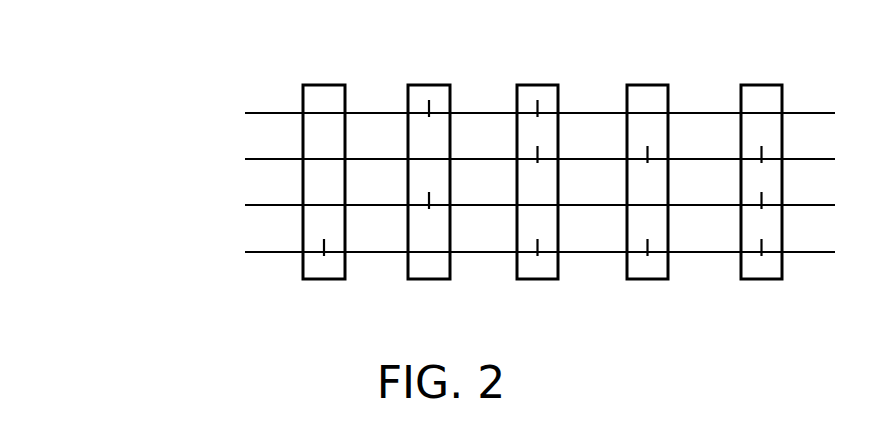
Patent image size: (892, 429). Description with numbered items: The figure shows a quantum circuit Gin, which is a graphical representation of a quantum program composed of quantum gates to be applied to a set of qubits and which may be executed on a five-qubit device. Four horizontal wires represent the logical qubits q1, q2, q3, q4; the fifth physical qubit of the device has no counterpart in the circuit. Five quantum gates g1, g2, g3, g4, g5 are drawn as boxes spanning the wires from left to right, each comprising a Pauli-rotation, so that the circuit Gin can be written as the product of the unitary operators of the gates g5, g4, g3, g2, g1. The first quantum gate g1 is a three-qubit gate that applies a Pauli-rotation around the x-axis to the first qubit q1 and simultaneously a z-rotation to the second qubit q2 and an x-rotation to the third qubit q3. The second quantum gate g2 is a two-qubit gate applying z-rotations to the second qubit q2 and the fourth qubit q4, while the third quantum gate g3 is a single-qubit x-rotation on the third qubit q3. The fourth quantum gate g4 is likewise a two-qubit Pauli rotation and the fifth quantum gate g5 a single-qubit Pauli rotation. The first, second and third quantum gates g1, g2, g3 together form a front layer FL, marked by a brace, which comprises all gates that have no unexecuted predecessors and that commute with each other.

The quantum circuit Gin is at (437, 144).
The first qubit q1 is at (240, 113).
The second qubit q2 is at (240, 159).
The third qubit q3 is at (240, 205).
The fourth qubit q4 is at (240, 252).
The first quantum gate g1 is at (323, 85).
The second quantum gate g2 is at (429, 85).
The third quantum gate g3 is at (536, 85).
The fourth quantum gate g4 is at (648, 85).
The fifth quantum gate g5 is at (760, 85).
The front layer FL is at (433, 183).